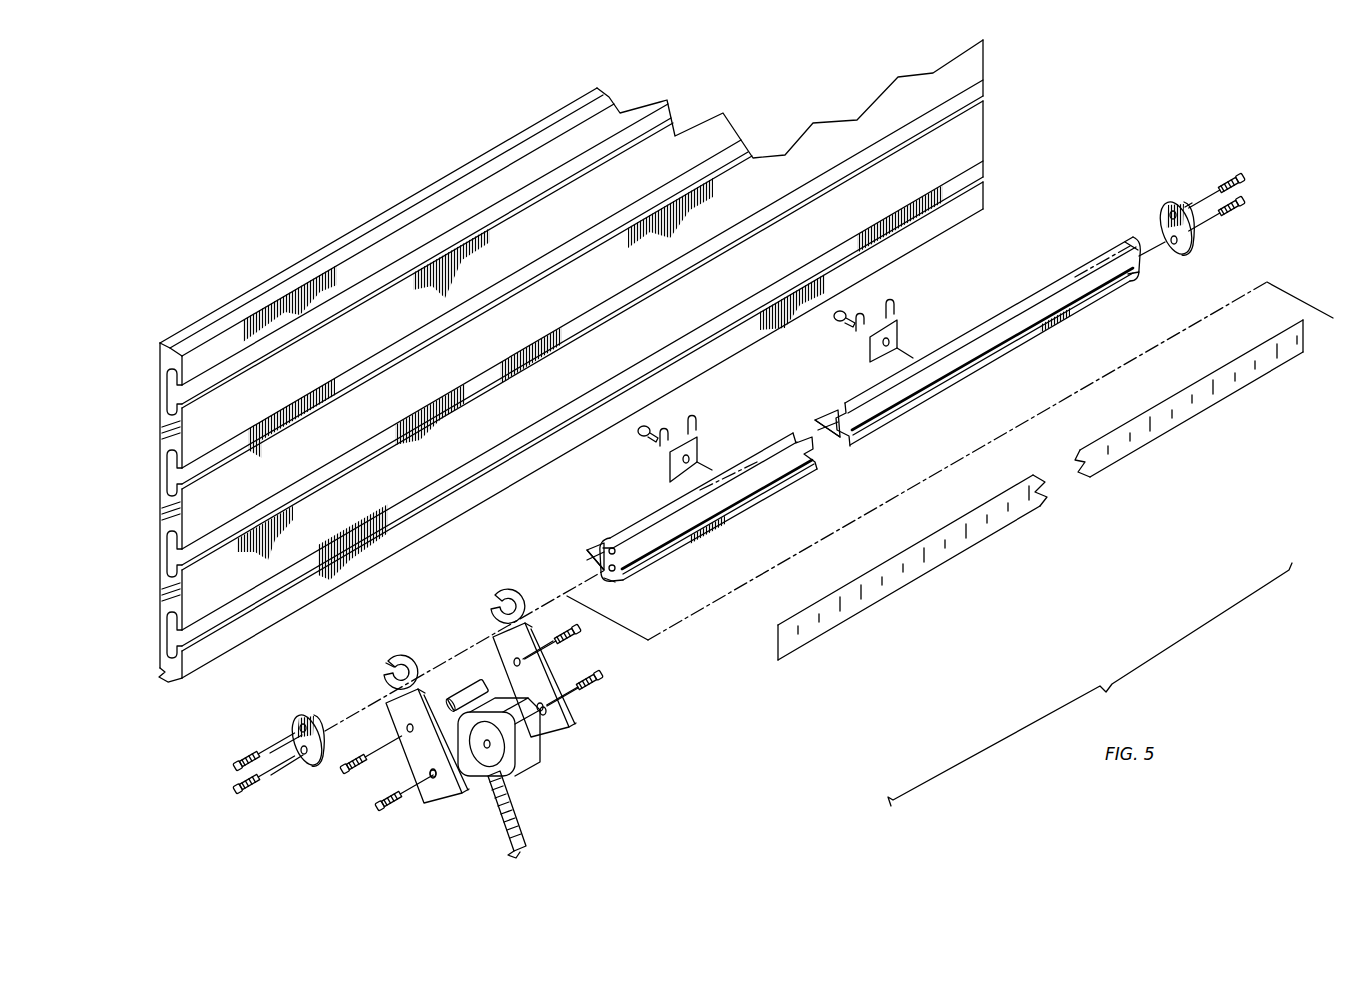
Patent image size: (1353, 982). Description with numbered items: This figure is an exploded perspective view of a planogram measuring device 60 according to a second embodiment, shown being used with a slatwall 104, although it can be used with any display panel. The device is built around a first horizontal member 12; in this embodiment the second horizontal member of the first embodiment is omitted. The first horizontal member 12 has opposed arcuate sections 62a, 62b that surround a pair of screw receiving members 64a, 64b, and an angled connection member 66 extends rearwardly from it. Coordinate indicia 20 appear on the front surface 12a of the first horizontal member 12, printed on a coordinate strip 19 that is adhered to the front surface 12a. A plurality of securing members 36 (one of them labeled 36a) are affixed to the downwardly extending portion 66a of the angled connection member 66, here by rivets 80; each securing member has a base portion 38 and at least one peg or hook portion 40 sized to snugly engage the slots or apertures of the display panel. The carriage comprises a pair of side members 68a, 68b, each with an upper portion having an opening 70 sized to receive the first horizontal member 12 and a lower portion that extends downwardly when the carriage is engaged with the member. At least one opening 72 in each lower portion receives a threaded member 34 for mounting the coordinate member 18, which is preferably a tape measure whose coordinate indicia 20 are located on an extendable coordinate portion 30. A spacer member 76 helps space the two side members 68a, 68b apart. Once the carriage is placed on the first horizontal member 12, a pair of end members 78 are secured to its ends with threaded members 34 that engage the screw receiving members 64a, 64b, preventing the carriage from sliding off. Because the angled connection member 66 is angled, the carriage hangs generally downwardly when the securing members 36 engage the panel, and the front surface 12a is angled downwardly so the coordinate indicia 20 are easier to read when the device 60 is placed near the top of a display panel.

The slatwall 104 is at (388, 258).
The planogram measuring device 60 is at (1105, 116).
The first horizontal member 12 is at (1051, 258).
The front surface 12a is at (1025, 335).
The arcuate section 62a is at (1125, 235).
The arcuate section 62b is at (1135, 276).
The screw receiving member 64a is at (596, 544).
The screw receiving member 64b is at (615, 582).
The angled connection member 66 is at (964, 341).
The downwardly extending portion 66a is at (818, 420).
The securing member 36 is at (905, 316).
The mounting bracket 36a is at (650, 465).
The base portion 38 is at (905, 340).
The peg or hook portion 40 is at (892, 308).
The rivet 80 is at (840, 323).
The end member 78 is at (1164, 203).
The threaded member 34 is at (1250, 198).
The side member 68a is at (369, 650).
The side member 68b is at (519, 580).
The opening 70 is at (394, 676).
The opening 72 is at (545, 711).
The spacer member 76 is at (470, 678).
The coordinate member 18 is at (537, 768).
The extendable coordinate portion 30 is at (525, 812).
The coordinate strip 19 is at (965, 550).
The coordinate indicia 20 is at (849, 603).